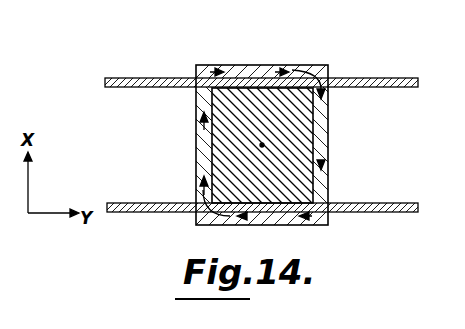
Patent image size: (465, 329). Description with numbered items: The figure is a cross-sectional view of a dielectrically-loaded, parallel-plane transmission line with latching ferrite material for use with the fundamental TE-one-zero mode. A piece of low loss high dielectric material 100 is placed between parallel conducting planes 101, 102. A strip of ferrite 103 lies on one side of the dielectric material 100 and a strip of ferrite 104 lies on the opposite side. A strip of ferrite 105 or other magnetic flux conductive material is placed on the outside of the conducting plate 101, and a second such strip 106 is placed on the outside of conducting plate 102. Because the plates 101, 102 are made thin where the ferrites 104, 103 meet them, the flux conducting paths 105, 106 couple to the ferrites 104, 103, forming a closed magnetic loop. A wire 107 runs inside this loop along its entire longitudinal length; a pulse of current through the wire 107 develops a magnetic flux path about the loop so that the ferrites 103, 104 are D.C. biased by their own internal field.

The low loss high dielectric material 100 is at (305, 183).
The conducting plane 101 is at (393, 77).
The conducting plane 102 is at (403, 203).
The strip of ferrite 103 is at (327, 110).
The strip of ferrite 104 is at (203, 116).
The strip of ferrite or magnetic flux conductive material 105 is at (291, 67).
The strip of ferrite or magnetic flux conductive material 106 is at (230, 220).
The wire 107 is at (262, 145).